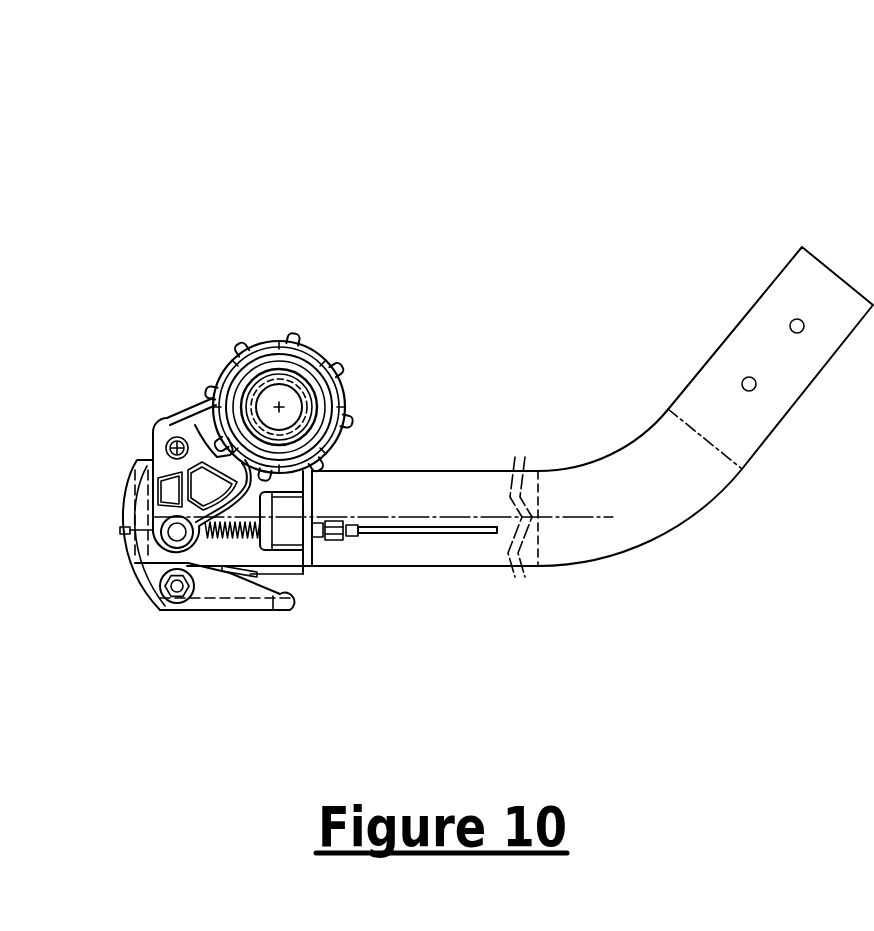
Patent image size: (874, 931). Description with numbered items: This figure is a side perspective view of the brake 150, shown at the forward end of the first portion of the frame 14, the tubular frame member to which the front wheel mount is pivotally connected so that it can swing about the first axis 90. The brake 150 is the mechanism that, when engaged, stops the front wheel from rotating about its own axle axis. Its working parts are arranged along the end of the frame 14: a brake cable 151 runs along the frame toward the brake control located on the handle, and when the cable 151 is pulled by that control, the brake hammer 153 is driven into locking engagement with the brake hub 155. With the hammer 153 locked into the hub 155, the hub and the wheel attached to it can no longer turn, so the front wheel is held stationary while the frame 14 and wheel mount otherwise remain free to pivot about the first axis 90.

The first portion of the frame 14 is at (417, 469).
The first axis 90 is at (153, 517).
The brake 150 is at (332, 330).
The brake cable 151 is at (383, 535).
The brake hammer 153 is at (167, 420).
The brake hub 155 is at (287, 341).